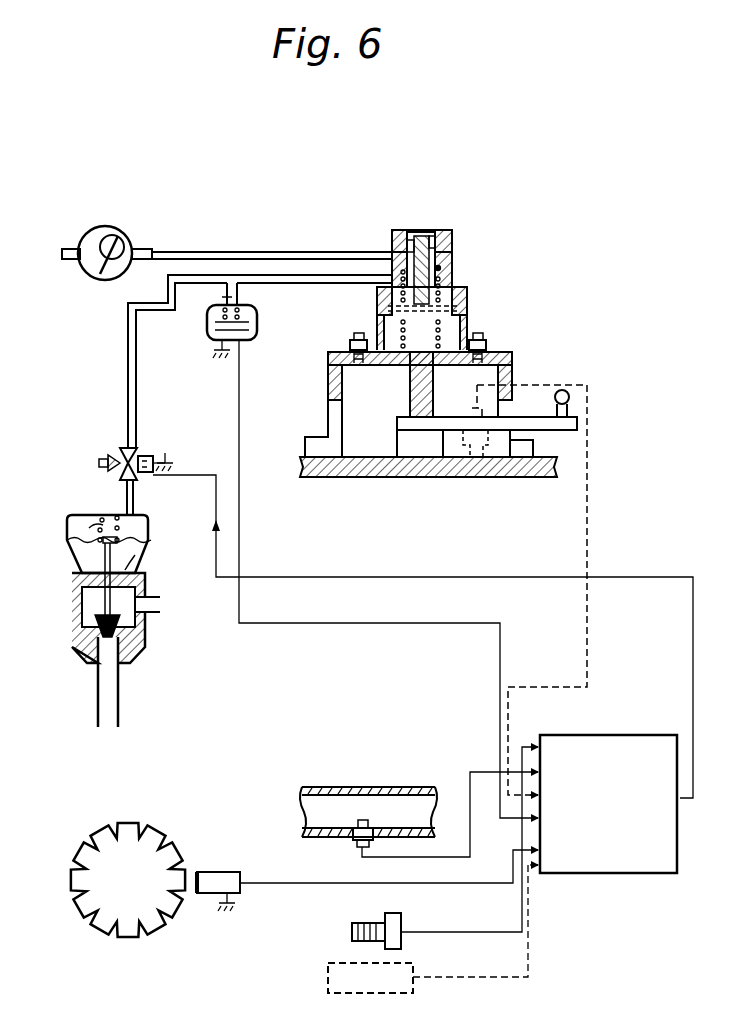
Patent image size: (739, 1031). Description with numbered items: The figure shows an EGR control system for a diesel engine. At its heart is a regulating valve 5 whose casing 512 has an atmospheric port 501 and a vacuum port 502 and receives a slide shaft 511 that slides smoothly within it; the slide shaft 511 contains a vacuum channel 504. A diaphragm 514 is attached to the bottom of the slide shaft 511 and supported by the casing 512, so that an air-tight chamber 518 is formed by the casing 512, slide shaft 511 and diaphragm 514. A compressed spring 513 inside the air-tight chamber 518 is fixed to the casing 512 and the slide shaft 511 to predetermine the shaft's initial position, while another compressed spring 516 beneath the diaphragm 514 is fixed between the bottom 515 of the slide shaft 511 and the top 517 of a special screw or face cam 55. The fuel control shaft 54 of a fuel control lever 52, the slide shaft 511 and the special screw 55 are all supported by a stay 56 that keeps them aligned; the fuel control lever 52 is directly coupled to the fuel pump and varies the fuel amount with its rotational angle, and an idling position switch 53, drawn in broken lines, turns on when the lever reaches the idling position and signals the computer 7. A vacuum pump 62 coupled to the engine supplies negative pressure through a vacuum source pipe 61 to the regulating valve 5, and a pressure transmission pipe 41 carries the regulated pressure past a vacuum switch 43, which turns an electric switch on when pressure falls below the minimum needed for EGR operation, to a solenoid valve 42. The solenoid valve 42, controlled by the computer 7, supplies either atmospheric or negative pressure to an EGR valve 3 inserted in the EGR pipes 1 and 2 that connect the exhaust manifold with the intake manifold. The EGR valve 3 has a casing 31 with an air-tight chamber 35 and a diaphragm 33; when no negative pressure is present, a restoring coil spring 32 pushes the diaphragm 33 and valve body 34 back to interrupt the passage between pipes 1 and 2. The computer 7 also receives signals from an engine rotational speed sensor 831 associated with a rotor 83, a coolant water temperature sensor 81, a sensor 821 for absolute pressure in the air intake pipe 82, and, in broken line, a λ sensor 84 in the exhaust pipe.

The EGR pipe 1 is at (123, 706).
The EGR pipe 2 is at (149, 622).
The EGR valve 3 is at (150, 529).
The casing 31 is at (148, 545).
The restoring coil spring 32 is at (88, 515).
The diaphragm 33 is at (137, 563).
The valve body 34 is at (78, 560).
The air-tight chamber 35 is at (132, 519).
The pressure transmission pipe 41 is at (127, 380).
The solenoid valve 42 is at (140, 451).
The vacuum switch 43 is at (205, 330).
The regulating valve 5 is at (445, 232).
The atmospheric port 501 is at (455, 245).
The vacuum port 502 is at (392, 240).
The vacuum channel 504 is at (430, 232).
The slide shaft 511 is at (407, 232).
The casing 512 is at (453, 258).
The compressed spring 513 is at (461, 280).
The diaphragm 514 is at (463, 302).
The bottom of the slide shaft 515 is at (468, 310).
The compressed spring 516 is at (470, 326).
The top of the special screw 517 is at (351, 348).
The air-tight chamber 518 is at (453, 268).
The fuel control lever 52 is at (568, 404).
The idling position switch 53 is at (502, 413).
The fuel control shaft 54 is at (450, 405).
The special screw 55 is at (410, 381).
The stay 56 is at (512, 365).
The vacuum source pipe 61 is at (236, 250).
The vacuum pump 62 is at (134, 235).
The computer 7 is at (622, 736).
The coolant water temperature sensor 81 is at (402, 925).
The air intake pipe 82 is at (324, 787).
The absolute pressure sensor 821 is at (368, 820).
The rotor 83 is at (134, 822).
The engine rotational speed sensor 831 is at (224, 872).
The λ sensor 84 is at (328, 978).